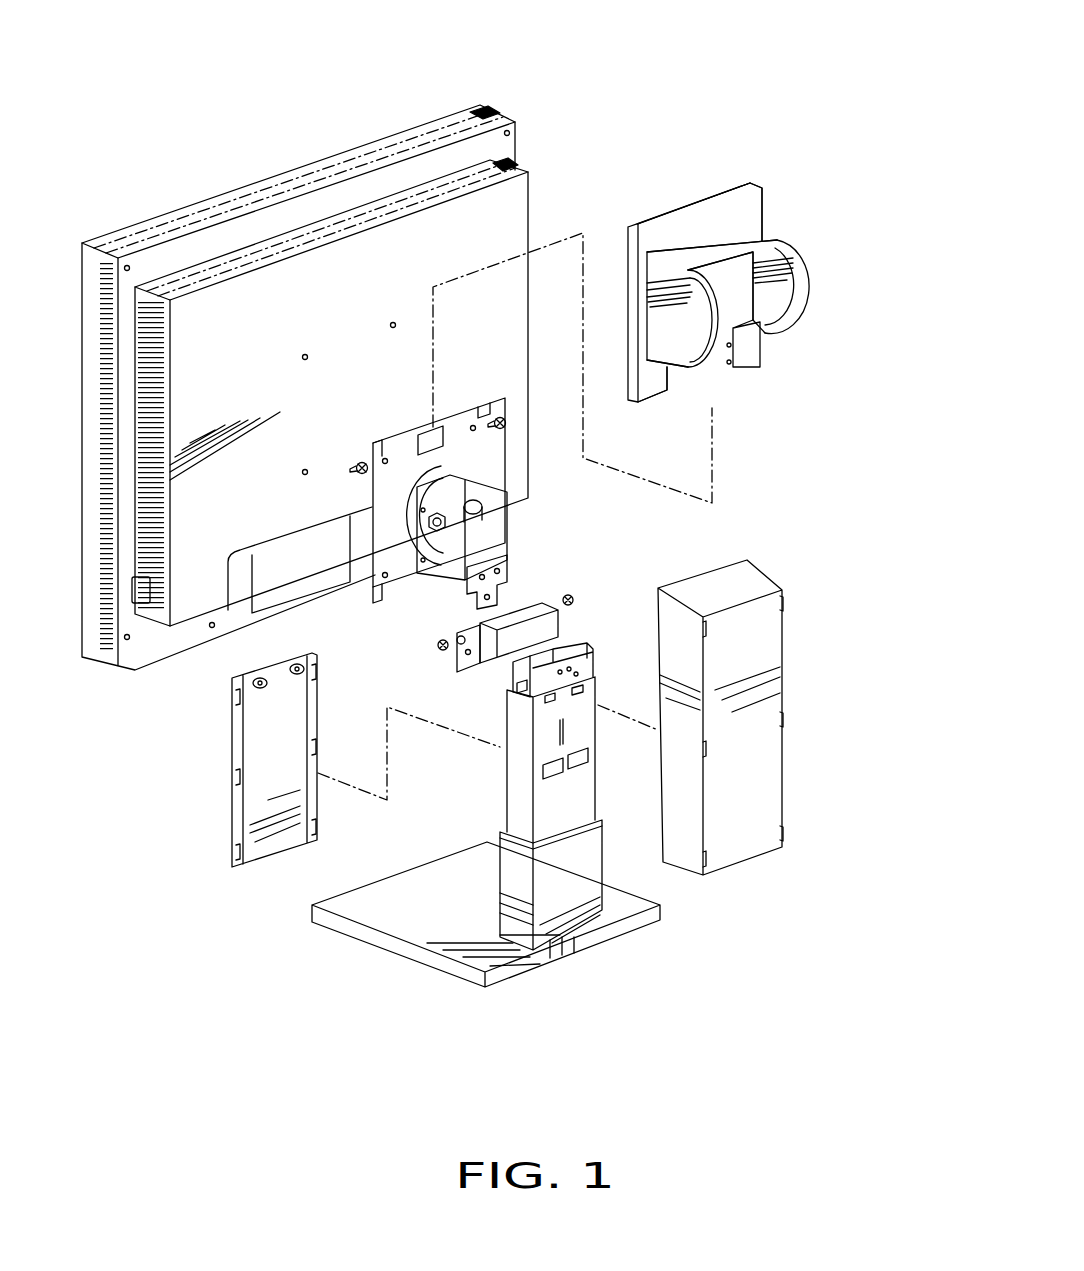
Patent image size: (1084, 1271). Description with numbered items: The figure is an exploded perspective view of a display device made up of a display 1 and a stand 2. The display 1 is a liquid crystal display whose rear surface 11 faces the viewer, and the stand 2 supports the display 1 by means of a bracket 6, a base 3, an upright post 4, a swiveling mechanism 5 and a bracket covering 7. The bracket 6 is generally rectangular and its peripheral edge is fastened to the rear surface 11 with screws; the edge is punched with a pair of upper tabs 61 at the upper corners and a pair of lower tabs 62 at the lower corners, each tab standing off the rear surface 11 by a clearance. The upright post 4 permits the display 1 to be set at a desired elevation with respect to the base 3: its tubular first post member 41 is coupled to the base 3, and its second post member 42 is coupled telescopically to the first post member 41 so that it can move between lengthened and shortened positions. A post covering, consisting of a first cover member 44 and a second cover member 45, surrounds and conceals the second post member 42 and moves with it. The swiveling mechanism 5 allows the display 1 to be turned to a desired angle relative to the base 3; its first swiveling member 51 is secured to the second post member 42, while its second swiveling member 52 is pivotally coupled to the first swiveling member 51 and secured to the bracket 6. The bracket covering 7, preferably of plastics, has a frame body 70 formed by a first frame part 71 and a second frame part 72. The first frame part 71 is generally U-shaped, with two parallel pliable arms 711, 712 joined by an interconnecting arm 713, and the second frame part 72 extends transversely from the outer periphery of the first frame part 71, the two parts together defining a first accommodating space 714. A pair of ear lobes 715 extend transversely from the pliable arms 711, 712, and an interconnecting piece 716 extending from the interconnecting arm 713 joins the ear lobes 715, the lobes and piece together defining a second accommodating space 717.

The display 1 is at (529, 95).
The rear surface 11 is at (510, 208).
The stand 2 is at (802, 572).
The base 3 is at (417, 953).
The upright post 4 is at (470, 824).
The first post member 41 is at (513, 777).
The second post member 42 is at (585, 665).
The first cover member 44 is at (232, 817).
The second cover member 45 is at (767, 778).
The swiveling mechanism 5 is at (530, 540).
The first swiveling member 51 is at (450, 553).
The second swiveling member 52 is at (422, 537).
The bracket 6 is at (473, 462).
The upper tabs 61 is at (500, 416).
The lower tabs 62 is at (373, 597).
The bracket covering 7 is at (802, 221).
The frame body 70 is at (767, 203).
The first frame part 71 is at (680, 385).
The pliable arm 711 is at (650, 388).
The pliable arm 712 is at (747, 357).
The interconnecting arm 713 is at (698, 228).
The first accommodating space 714 is at (710, 373).
The ear lobes 715 is at (800, 260).
The interconnecting piece 716 is at (738, 233).
The second accommodating space 717 is at (730, 297).
The second frame part 72 is at (680, 205).